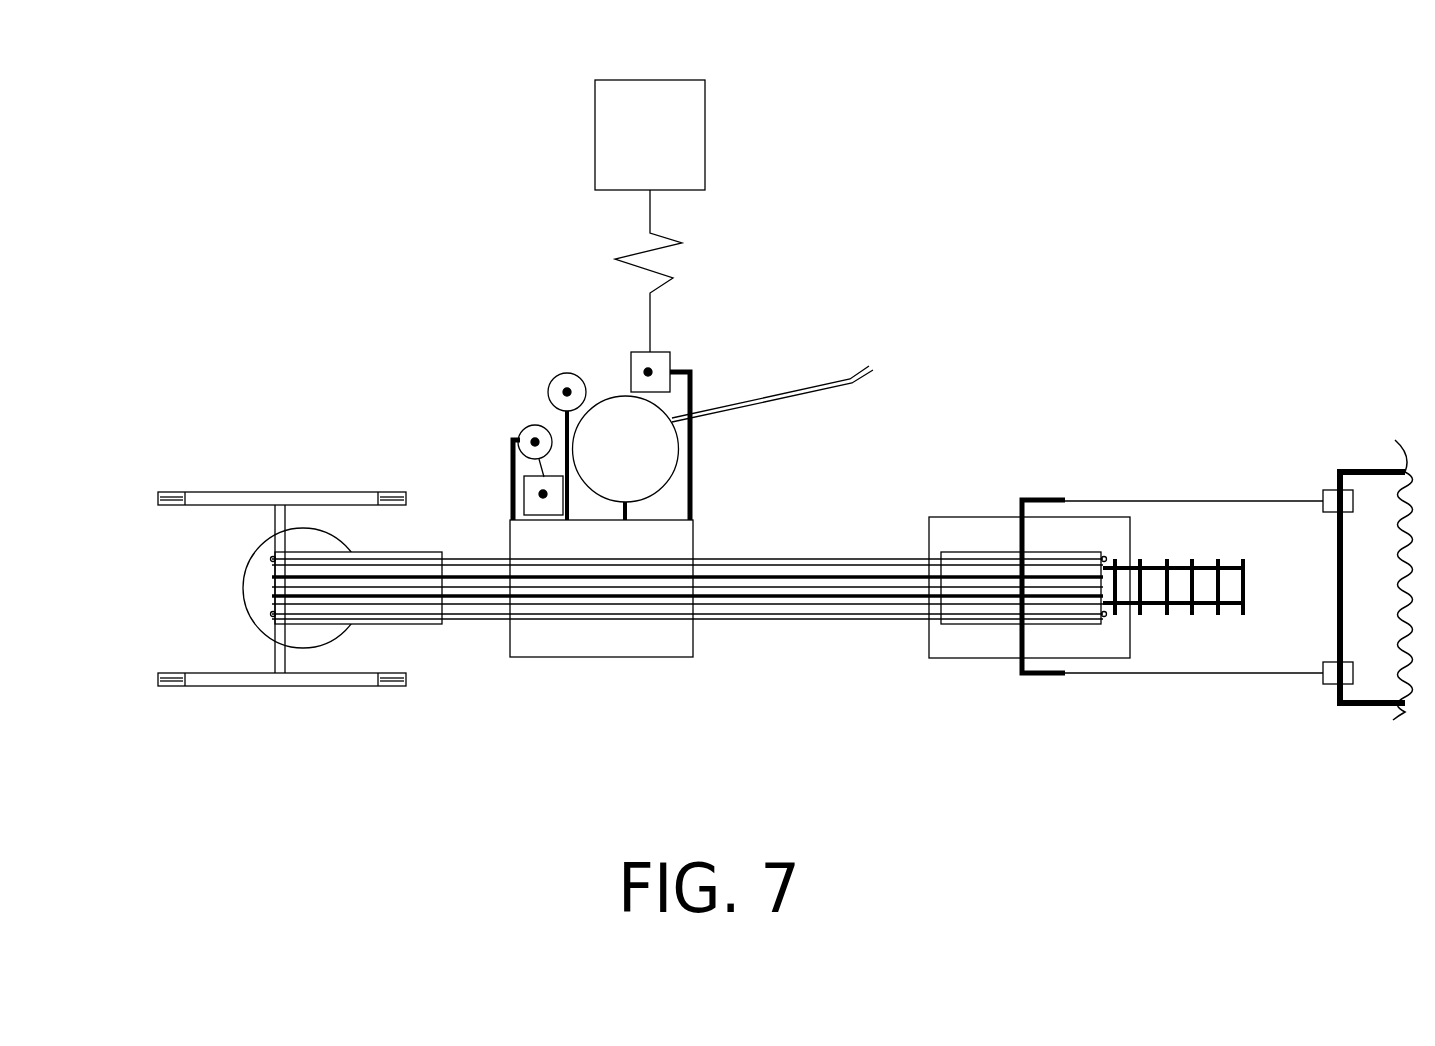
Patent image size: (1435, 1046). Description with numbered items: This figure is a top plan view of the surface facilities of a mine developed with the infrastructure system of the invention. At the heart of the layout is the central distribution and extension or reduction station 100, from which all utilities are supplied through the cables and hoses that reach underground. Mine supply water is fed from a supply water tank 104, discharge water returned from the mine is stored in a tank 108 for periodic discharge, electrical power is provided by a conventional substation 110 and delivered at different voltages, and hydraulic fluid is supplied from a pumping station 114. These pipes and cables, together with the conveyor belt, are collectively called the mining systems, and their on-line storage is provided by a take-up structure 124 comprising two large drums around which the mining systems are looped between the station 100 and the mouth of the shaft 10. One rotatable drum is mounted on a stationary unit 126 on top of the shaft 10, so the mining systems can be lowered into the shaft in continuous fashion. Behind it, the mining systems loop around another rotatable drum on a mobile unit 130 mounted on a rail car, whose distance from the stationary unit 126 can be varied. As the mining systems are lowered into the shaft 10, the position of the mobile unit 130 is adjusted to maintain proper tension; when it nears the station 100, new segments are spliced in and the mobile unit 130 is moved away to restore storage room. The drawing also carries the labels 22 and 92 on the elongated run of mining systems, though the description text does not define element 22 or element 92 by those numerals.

The shaft 10 is at (252, 588).
The wire strip 22 is at (735, 622).
The wire 92 is at (843, 594).
The central distribution and extension or reduction station 100 is at (640, 653).
The supply water tank 104 is at (562, 385).
The tank 108 is at (617, 425).
The substation 110 is at (685, 140).
The pumping station 114 is at (543, 493).
The take-up structure 124 is at (823, 497).
The stationary unit 126 is at (417, 623).
The mobile unit 130 is at (1097, 522).